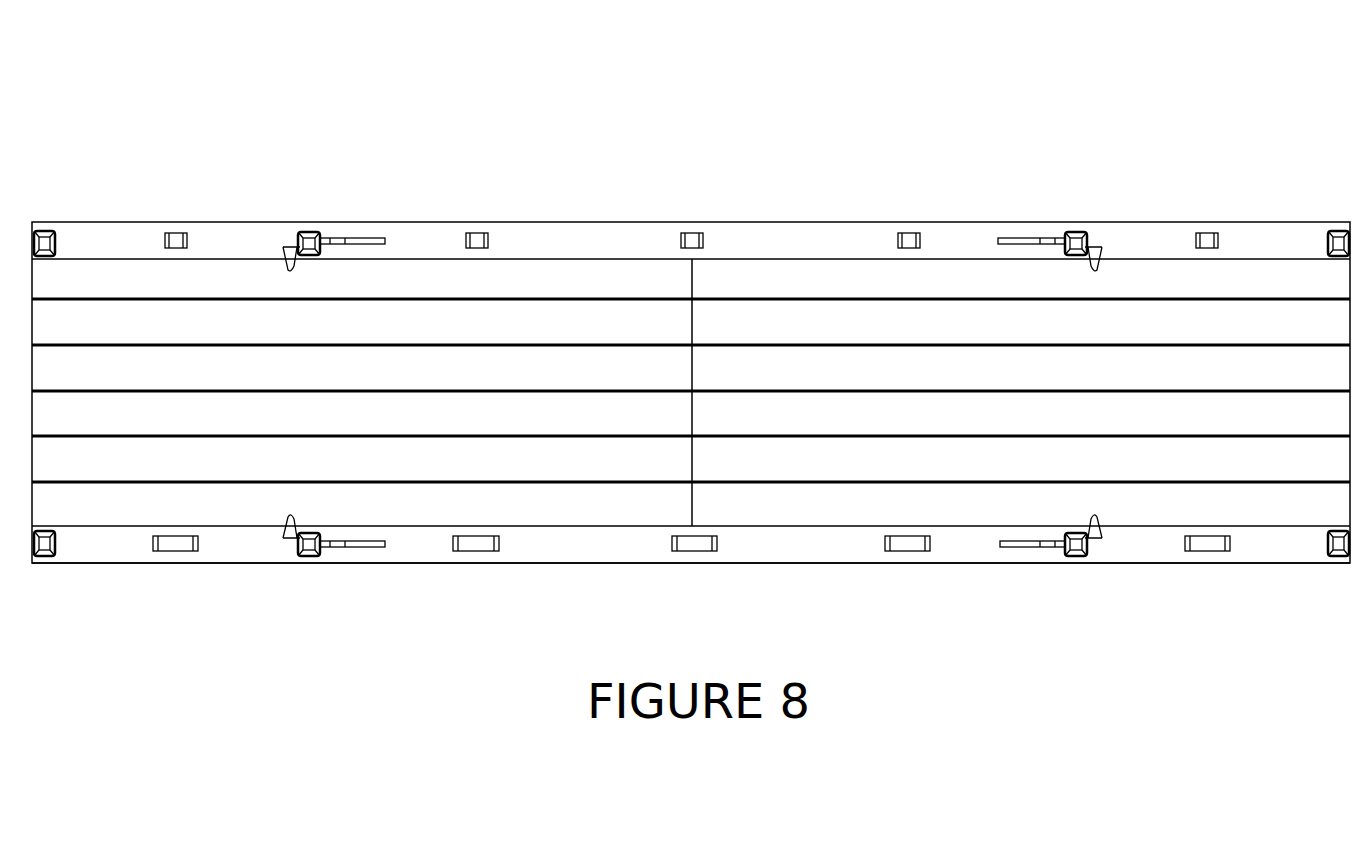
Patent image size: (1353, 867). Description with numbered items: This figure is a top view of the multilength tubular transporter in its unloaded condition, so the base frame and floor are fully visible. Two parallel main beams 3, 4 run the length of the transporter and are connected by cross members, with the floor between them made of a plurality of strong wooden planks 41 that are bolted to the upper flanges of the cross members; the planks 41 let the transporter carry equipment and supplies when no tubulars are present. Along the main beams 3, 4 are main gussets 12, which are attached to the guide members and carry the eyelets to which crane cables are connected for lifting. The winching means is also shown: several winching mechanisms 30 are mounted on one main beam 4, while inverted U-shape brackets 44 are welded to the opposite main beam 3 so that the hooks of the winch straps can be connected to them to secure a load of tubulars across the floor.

The main beam 3 is at (691, 321).
The main beam 4 is at (691, 625).
The main gusset 12 is at (689, 301).
The winching mechanism 30 is at (652, 621).
The wooden plank 41 is at (691, 287).
The inverted U-shape bracket 44 is at (666, 139).